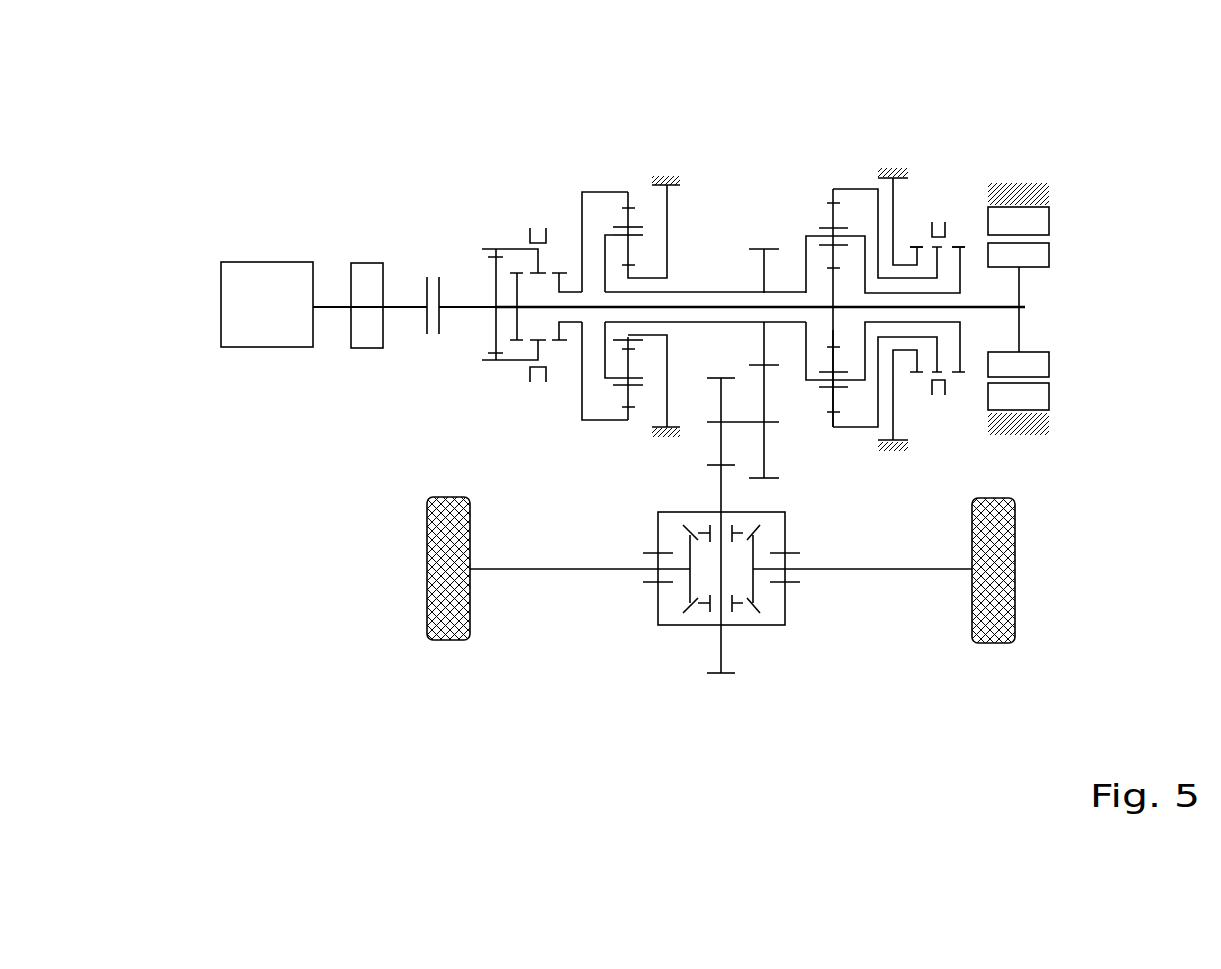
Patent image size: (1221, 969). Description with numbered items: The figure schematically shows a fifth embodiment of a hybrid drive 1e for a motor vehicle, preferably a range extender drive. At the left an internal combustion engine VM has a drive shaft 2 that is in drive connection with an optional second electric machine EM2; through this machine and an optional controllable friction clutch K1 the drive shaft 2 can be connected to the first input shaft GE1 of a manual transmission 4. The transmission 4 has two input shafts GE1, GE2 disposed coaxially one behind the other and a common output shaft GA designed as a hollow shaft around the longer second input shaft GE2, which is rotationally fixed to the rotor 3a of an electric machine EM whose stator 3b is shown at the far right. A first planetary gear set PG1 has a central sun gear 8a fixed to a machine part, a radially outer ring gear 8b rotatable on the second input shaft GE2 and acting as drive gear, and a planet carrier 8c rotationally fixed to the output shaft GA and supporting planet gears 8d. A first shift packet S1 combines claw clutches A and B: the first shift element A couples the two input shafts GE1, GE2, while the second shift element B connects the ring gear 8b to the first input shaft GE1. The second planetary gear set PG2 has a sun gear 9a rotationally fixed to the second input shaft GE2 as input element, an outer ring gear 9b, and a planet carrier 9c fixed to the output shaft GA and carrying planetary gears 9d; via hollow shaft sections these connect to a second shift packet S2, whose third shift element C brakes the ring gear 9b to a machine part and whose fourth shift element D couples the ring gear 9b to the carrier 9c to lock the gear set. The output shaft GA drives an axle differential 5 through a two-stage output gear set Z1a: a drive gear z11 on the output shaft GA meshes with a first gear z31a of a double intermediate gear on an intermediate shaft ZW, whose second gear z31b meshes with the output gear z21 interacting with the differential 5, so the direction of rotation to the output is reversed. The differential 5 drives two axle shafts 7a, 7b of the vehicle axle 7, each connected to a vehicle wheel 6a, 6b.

The hybrid drive 1e is at (223, 128).
The drive shaft 2 is at (330, 300).
The controllable friction clutch K1 is at (420, 280).
The first input shaft GE1 is at (463, 298).
The manual transmission 4 is at (568, 137).
The first planetary gear set PG1 is at (627, 183).
The ring gear 8b is at (620, 212).
The planet gears 8d is at (626, 222).
The sun gear 8a is at (622, 340).
The planet carrier 8c is at (613, 378).
The common output shaft GA is at (724, 290).
The drive gear z11 is at (772, 249).
The planetary gears 9d is at (832, 215).
The second planetary gear set PG2 is at (840, 185).
The ring gear 9b is at (864, 189).
The sun gear 9a is at (833, 330).
The planet carrier 9c is at (813, 380).
The second input shaft GE2 is at (973, 300).
The electric machine EM is at (1069, 231).
The stator 3b is at (1049, 223).
The rotor 3a is at (1049, 250).
The internal combustion engine VM is at (283, 350).
The second electric machine EM2 is at (365, 350).
The first shift element A is at (528, 216).
The second shift element B is at (548, 286).
The shift packet S1 is at (532, 335).
The third shift element C is at (916, 217).
The fourth shift element D is at (957, 217).
The second shift packet S2 is at (937, 328).
The vehicle wheel 6a is at (438, 642).
The vehicle wheel 6b is at (1015, 537).
The axle shaft 7a is at (507, 572).
The axle shaft 7b is at (910, 572).
The vehicle axle 7 is at (957, 578).
The axle differential 5 is at (677, 630).
The intermediate shaft ZW is at (740, 422).
The second gear z31b is at (708, 378).
The output gear z21 is at (717, 677).
The first gear z31a is at (772, 482).
The two-stage output gear set Z1a is at (720, 742).